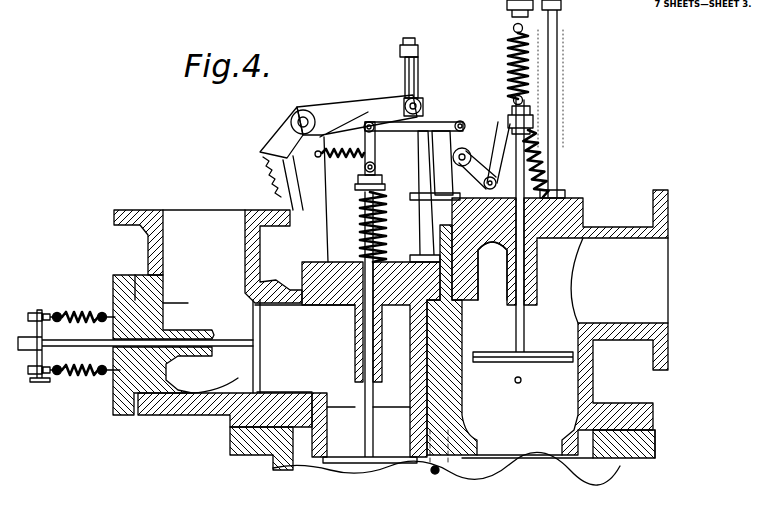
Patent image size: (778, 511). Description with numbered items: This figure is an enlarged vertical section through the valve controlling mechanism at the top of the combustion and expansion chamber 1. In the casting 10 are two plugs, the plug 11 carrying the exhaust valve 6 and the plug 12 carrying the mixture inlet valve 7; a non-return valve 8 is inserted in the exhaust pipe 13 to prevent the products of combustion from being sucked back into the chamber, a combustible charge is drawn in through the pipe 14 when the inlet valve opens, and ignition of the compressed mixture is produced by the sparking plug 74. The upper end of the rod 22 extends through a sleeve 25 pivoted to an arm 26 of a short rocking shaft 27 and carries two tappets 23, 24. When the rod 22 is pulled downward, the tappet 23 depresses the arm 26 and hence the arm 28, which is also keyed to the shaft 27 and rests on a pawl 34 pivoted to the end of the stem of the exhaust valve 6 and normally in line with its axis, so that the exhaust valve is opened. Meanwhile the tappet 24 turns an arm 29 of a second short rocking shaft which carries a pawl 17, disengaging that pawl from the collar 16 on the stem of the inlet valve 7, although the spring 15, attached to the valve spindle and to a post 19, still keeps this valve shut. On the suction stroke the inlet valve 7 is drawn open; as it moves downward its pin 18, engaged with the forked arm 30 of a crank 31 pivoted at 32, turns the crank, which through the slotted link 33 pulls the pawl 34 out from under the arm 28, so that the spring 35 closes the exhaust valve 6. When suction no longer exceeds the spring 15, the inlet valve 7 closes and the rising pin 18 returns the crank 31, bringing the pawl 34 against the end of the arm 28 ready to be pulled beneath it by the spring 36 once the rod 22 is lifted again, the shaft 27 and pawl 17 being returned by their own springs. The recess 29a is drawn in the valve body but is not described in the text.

The combustion and expansion chamber 1 is at (308, 462).
The exhaust valve 6 is at (349, 455).
The mixture inlet valve 7 is at (499, 351).
The non-return valve 8 is at (246, 366).
The casting 10 is at (232, 418).
The plug 11 is at (340, 310).
The plug 12 is at (585, 199).
The exhaust pipe 13 is at (199, 222).
The pipe 14 is at (600, 291).
The spring 15 is at (508, 62).
The collar 16 is at (526, 118).
The pawl 17 is at (530, 160).
The pin 18 is at (528, 144).
The post 19 is at (553, 52).
The rod 22 is at (430, 474).
The tappet 23 is at (418, 52).
The tappet 24 is at (412, 140).
The sleeve 25 is at (421, 104).
The arm 26 is at (379, 98).
The short rocking shaft 27 is at (296, 120).
The arm 28 is at (333, 112).
The arm 29 is at (458, 194).
The recess 29a is at (492, 271).
The forked arm 30 is at (522, 146).
The crank 31 is at (532, 152).
The pivot 32 is at (453, 157).
The slotted link 33 is at (439, 163).
The pawl 34 is at (363, 141).
The spring 35 is at (380, 214).
The spring 36 is at (340, 156).
The sparking plug 74 is at (518, 383).